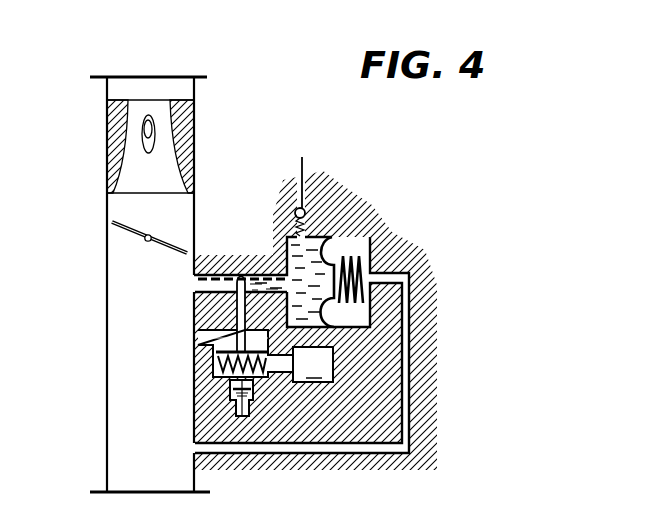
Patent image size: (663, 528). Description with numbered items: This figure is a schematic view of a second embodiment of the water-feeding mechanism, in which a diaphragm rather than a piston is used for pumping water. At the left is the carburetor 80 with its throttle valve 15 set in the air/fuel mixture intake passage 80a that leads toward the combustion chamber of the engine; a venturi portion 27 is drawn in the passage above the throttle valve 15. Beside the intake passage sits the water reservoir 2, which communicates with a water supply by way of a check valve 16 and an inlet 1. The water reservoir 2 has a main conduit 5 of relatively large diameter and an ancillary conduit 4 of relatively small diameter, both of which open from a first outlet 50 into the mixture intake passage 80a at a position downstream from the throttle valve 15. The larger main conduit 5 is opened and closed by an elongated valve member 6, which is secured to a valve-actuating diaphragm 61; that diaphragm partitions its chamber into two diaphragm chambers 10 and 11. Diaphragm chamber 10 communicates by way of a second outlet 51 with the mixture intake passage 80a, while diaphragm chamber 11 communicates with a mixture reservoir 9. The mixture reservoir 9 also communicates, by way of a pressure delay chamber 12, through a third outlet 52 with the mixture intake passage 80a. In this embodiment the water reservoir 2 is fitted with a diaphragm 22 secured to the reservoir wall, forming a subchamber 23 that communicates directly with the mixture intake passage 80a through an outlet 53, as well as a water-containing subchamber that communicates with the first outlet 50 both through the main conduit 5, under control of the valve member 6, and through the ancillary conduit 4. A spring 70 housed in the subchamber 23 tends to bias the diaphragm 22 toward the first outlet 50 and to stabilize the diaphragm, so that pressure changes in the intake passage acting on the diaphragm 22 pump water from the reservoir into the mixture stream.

The inlet 1 is at (312, 168).
The water reservoir 2 is at (313, 250).
The ancillary conduit 4 is at (208, 263).
The main conduit 5 is at (257, 281).
The valve member 6 is at (240, 276).
The mixture reservoir 9 is at (313, 364).
The diaphragm chamber 10 is at (220, 330).
The diaphragm chamber 11 is at (195, 374).
The pressure delay chamber 12 is at (223, 412).
The throttle valve 15 is at (118, 222).
The check valve 16 is at (294, 211).
The diaphragm 22 is at (337, 247).
The subchamber 23 is at (355, 246).
The venturi 27 is at (187, 137).
The first outlet 50 is at (198, 287).
The second outlet 51 is at (196, 340).
The third outlet 52 is at (197, 406).
The outlet 53 is at (198, 453).
The valve-actuating diaphragm 61 is at (195, 361).
The spring 70 is at (348, 302).
The carburetor 80 is at (100, 257).
The air/fuel mixture intake passage 80a is at (123, 343).